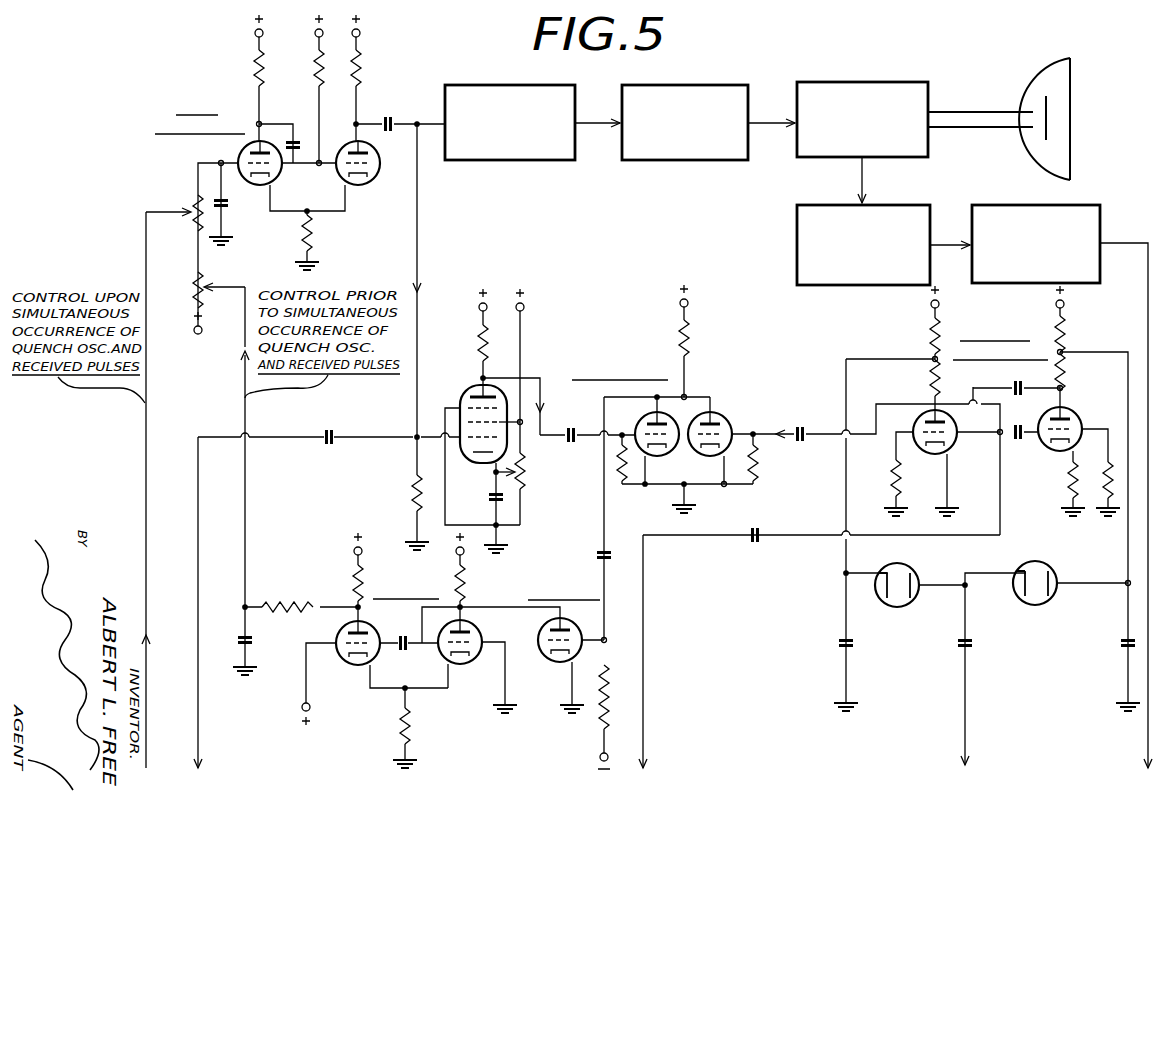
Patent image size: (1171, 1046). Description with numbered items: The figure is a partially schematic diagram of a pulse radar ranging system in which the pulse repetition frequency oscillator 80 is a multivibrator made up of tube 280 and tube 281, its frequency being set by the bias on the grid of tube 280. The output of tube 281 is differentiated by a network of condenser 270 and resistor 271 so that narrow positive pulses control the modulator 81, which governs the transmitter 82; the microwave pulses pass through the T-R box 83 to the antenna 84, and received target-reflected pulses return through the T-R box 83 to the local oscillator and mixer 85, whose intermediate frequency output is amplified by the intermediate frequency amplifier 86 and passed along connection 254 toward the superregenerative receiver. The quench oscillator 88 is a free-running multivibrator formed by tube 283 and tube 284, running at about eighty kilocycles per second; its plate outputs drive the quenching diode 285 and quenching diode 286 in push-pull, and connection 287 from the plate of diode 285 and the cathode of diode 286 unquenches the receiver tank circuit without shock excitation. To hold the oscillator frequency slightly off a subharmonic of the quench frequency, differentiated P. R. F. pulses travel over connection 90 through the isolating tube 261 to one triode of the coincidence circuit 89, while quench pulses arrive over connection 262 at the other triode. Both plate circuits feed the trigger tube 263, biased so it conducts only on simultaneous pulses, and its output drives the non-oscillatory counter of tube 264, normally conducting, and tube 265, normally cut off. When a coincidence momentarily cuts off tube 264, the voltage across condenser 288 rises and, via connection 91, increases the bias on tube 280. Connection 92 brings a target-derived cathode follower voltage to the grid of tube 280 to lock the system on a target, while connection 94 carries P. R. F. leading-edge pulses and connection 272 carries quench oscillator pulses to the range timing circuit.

The P. R. F. oscillator 80 is at (320, 193).
The modulator 81 is at (509, 88).
The transmitter 82 is at (678, 86).
The T-R box 83 is at (865, 82).
The antenna 84 is at (1082, 81).
The local oscillator and mixer 85 is at (902, 213).
The intermediate frequency amplifier 86 is at (1032, 213).
The quench oscillator 88 is at (1037, 481).
The coincidence circuit 89 is at (690, 477).
The connection 90 is at (422, 264).
The connection 91 is at (250, 514).
The connection 92 is at (148, 574).
The connection 94 is at (198, 574).
The connection 254 is at (1148, 737).
The isolating tube 261 is at (470, 388).
The connection 262 is at (763, 432).
The trigger tube 263 is at (540, 635).
The counter tube 264 is at (340, 664).
The counter tube 265 is at (455, 666).
The condenser 270 is at (390, 119).
The resistor 271 is at (412, 500).
The connection 272 is at (646, 701).
The tube 280 is at (238, 153).
The tube 281 is at (365, 188).
The tube 283 is at (957, 446).
The tube 284 is at (1070, 411).
The quenching diode 285 is at (915, 571).
The quenching diode 286 is at (1045, 571).
The connection 287 is at (968, 729).
The condenser 288 is at (255, 645).